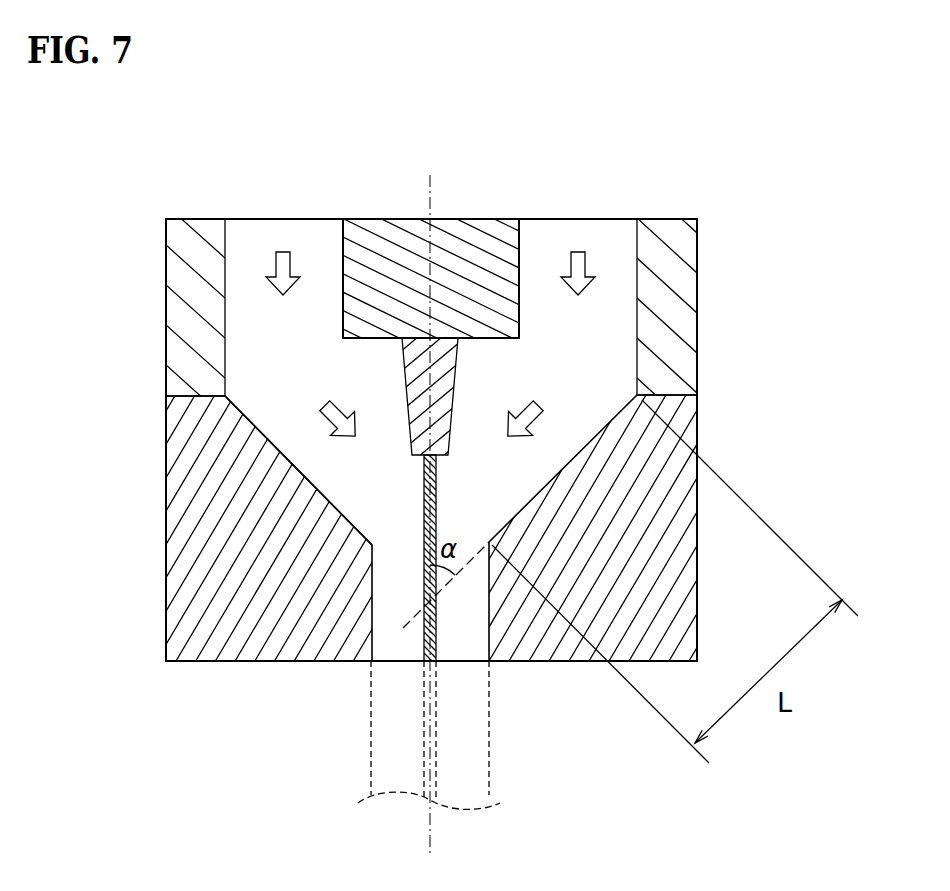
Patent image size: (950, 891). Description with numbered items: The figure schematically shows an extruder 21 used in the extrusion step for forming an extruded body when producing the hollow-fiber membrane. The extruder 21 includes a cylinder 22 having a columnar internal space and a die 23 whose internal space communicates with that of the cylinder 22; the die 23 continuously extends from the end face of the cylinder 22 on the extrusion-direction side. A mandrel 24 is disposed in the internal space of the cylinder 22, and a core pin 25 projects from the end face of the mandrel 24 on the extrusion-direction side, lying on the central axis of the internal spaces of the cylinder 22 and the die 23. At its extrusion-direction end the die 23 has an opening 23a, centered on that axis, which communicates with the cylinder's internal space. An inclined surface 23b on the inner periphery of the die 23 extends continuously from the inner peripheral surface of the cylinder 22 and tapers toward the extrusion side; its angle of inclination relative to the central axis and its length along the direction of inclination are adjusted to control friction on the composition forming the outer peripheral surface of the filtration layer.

The extruder 21 is at (688, 180).
The cylinder 22 is at (178, 238).
The die 23 is at (205, 538).
The opening 23a is at (393, 662).
The inclined surface 23b is at (236, 404).
The mandrel 24 is at (403, 388).
The core pin 25 is at (425, 563).